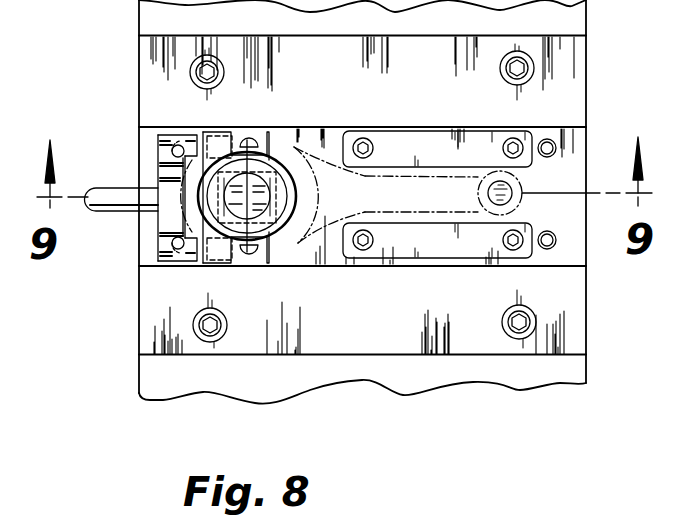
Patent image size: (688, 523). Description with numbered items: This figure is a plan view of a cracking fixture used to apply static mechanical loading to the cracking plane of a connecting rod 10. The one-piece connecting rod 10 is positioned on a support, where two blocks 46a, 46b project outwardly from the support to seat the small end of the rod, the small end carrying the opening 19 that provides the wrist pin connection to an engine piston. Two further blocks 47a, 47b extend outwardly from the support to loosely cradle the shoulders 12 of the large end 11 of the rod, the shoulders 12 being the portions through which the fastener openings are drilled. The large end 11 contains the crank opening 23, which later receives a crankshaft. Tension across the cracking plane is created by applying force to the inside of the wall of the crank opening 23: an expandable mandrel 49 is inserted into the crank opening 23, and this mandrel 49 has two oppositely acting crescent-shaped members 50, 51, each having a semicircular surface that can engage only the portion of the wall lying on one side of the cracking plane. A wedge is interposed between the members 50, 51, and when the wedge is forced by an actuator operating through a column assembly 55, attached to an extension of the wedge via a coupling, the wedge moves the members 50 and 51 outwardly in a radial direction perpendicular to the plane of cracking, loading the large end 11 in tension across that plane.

The connecting rod 10 is at (403, 208).
The large end 11 is at (314, 157).
The shoulders 12 is at (217, 141).
The opening 19 is at (488, 202).
The crank opening 23 is at (302, 237).
The block 46a is at (437, 244).
The block 46b is at (443, 101).
The block 47a is at (193, 262).
The block 47b is at (190, 112).
The expandable mandrel 49 is at (208, 205).
The crescent-shaped member 50 is at (168, 171).
The crescent-shaped member 51 is at (294, 191).
The column assembly 55 is at (279, 262).